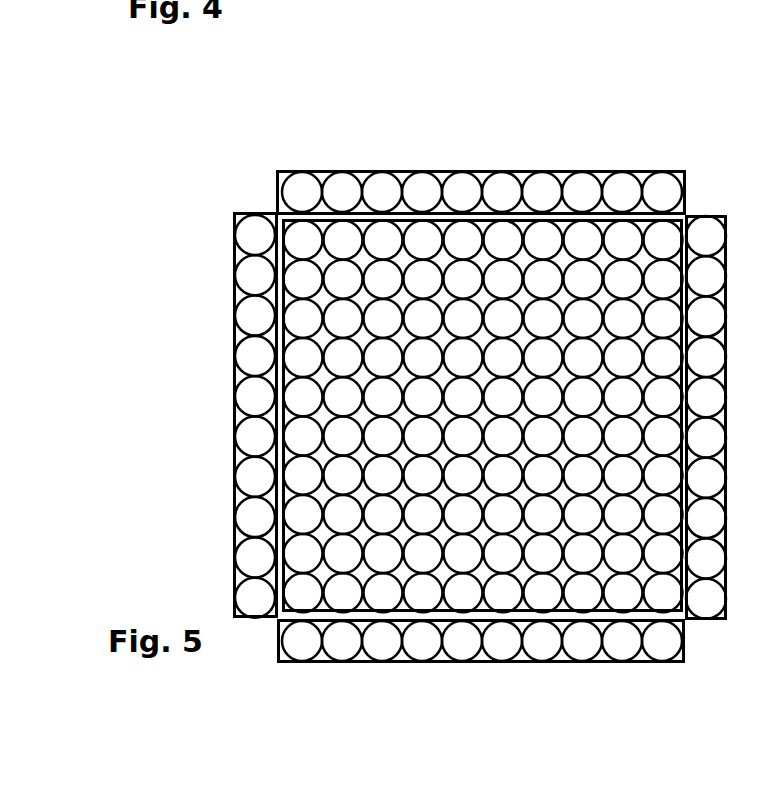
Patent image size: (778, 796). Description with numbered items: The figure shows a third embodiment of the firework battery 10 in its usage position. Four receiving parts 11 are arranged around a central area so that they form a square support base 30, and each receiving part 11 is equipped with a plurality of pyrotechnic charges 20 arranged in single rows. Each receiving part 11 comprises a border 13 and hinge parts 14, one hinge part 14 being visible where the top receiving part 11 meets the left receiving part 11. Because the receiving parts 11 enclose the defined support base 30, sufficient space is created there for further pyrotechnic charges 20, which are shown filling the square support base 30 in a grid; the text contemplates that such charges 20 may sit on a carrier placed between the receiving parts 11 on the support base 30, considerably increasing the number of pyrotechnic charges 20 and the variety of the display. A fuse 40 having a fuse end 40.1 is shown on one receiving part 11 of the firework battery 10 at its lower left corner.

The firework battery 10 is at (232, 97).
The receiving part 11 is at (402, 177).
The border 13 is at (233, 448).
The hinge part 14 is at (277, 212).
The pyrotechnic charge 20 is at (342, 186).
The support base 30 is at (280, 338).
The fuse 40 is at (227, 603).
The fuse end 40.1 is at (156, 583).